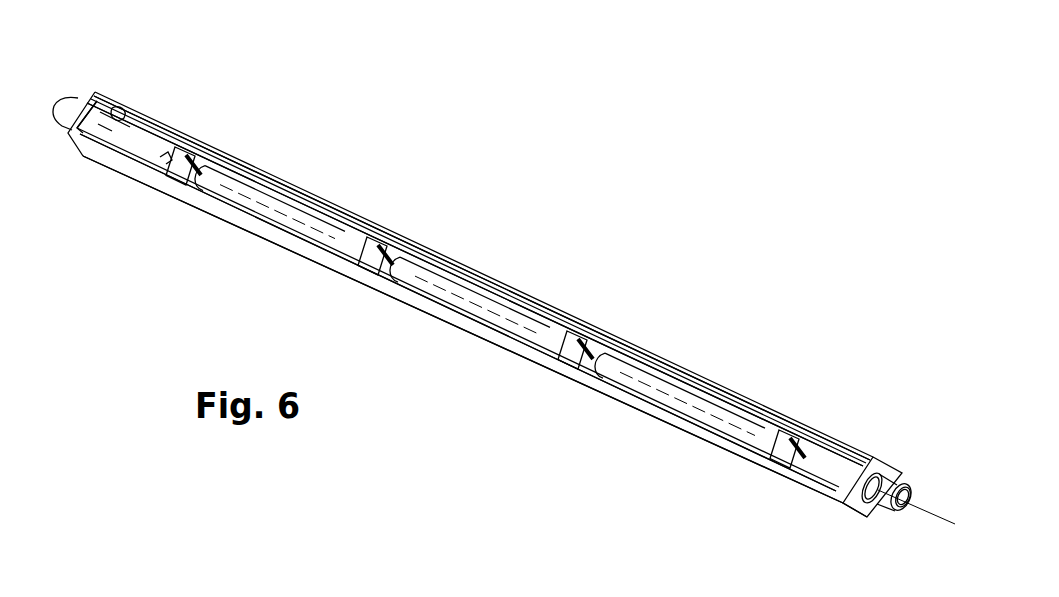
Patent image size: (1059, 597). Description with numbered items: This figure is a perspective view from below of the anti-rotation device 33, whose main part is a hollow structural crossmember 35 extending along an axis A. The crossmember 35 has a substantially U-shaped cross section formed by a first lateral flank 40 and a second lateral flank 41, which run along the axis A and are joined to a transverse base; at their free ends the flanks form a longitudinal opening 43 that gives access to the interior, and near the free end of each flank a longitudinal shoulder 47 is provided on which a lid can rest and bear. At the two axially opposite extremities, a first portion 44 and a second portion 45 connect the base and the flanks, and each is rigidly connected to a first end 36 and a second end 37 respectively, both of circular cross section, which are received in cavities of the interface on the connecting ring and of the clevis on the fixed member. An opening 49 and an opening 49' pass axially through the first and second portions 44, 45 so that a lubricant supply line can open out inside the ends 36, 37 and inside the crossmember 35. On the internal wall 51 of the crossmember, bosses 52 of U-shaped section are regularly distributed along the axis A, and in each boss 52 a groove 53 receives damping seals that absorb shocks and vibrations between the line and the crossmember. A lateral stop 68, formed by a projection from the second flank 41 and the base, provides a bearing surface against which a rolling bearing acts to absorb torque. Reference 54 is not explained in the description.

The anti-rotation device 33 is at (650, 318).
The structural crossmember 35 is at (895, 457).
The first end 36 is at (80, 100).
The second end 37 is at (917, 487).
The first lateral flank 40 is at (127, 167).
The second lateral flank 41 is at (173, 147).
The longitudinal opening 43 is at (141, 128).
The first portion 44 is at (102, 97).
The second portion 45 is at (842, 510).
The longitudinal shoulder 47 is at (227, 160).
The opening 49 is at (122, 64).
The opening 49' is at (910, 536).
The internal wall 51 is at (458, 300).
The boss 52 is at (408, 245).
The groove 53 is at (373, 245).
The sheet 54 is at (179, 587).
The lateral stop 68 is at (895, 468).
The axis A is at (933, 523).